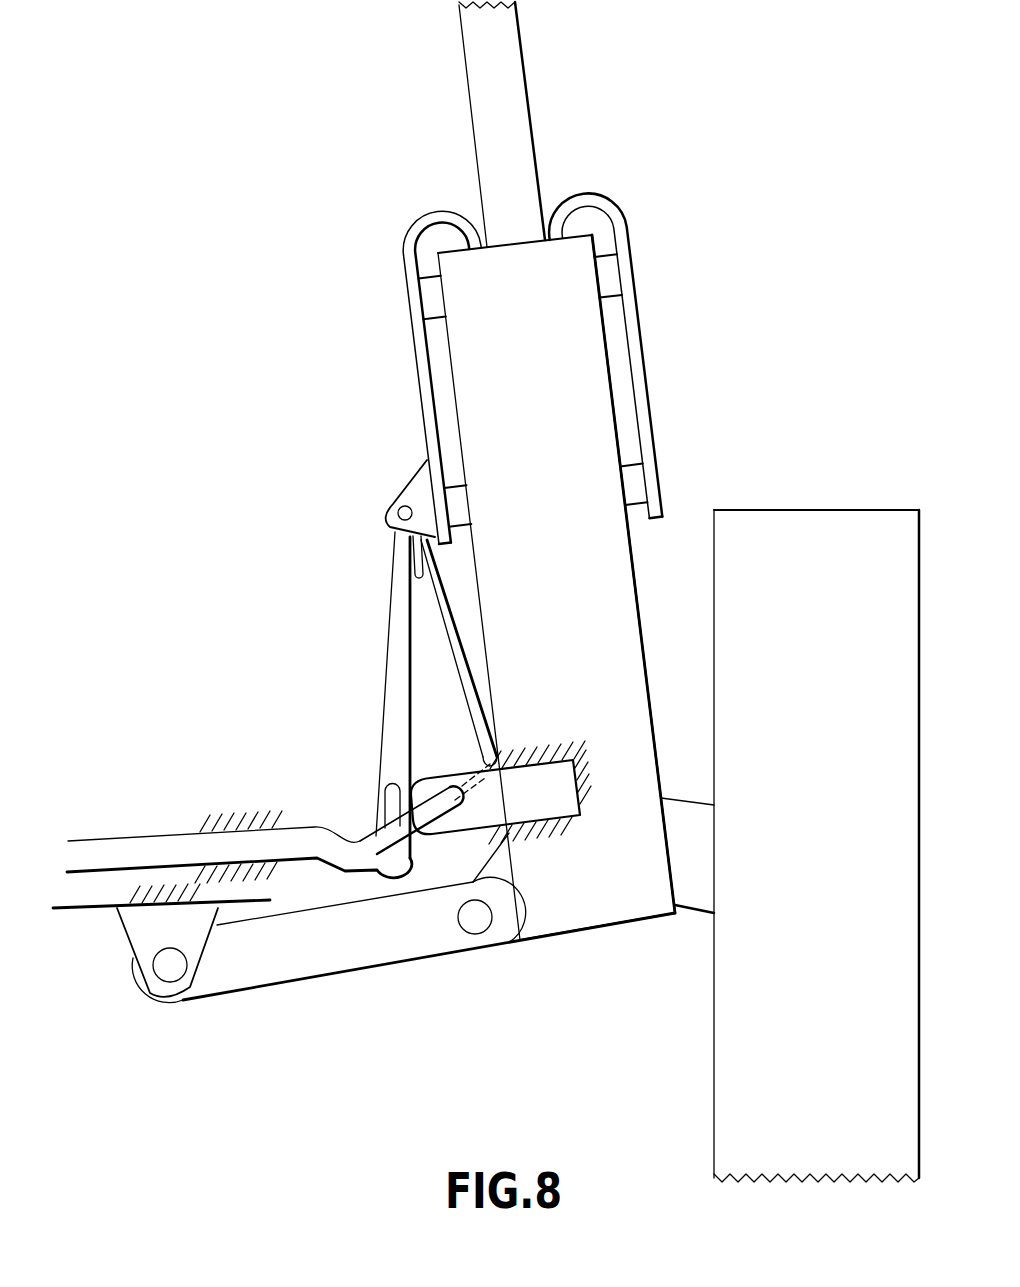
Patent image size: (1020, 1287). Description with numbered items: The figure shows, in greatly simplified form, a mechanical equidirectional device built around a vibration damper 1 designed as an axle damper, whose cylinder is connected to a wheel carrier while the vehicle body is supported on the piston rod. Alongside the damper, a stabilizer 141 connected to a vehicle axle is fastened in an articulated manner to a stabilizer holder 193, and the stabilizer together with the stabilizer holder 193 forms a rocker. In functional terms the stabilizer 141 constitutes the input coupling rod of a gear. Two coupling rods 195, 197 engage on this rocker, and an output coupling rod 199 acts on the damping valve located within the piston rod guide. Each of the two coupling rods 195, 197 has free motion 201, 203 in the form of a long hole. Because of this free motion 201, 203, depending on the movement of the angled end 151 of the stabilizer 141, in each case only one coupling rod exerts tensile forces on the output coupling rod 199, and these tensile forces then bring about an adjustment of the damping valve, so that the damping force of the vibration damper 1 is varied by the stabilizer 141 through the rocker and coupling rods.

The vibration damper 1 is at (615, 609).
The stabilizer 141 is at (155, 850).
The angled end 151 is at (370, 852).
The stabilizer holder 193 is at (540, 805).
The coupling rod 195 is at (395, 668).
The coupling rod 197 is at (433, 627).
The output coupling rod 199 is at (423, 383).
The free motion 201 is at (388, 787).
The free motion 203 is at (418, 573).